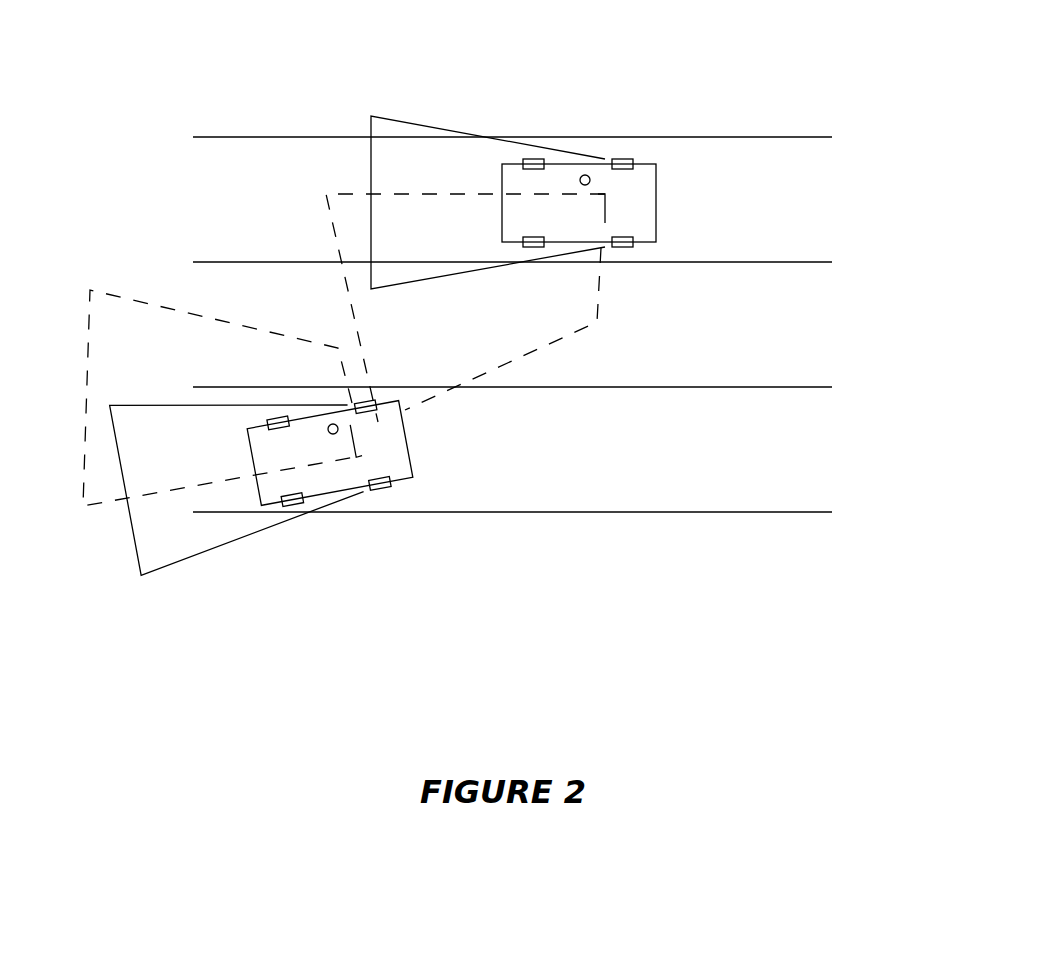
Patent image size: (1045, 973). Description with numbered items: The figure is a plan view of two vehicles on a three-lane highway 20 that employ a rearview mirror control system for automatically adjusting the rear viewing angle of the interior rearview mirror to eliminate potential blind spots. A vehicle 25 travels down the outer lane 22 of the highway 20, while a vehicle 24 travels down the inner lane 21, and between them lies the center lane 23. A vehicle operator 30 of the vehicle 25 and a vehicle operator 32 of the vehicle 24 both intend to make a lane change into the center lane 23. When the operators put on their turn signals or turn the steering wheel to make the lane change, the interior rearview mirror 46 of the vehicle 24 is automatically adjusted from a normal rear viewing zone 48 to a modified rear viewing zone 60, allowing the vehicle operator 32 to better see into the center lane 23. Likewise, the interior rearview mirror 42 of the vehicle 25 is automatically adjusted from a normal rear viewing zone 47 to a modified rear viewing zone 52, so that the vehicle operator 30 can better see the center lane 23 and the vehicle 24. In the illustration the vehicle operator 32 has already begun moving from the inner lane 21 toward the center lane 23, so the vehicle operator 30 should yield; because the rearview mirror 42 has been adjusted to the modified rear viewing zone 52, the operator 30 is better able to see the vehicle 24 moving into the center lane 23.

The three-lane highway 20 is at (737, 137).
The inner lane 21 is at (778, 443).
The outer lane 22 is at (778, 195).
The center lane 23 is at (778, 318).
The vehicle 24 is at (407, 440).
The vehicle 25 is at (656, 204).
The vehicle operator 30 is at (585, 175).
The vehicle operator 32 is at (328, 428).
The interior rearview mirror 42 is at (605, 203).
The interior rearview mirror 46 is at (358, 448).
The normal rear viewing zone 47 is at (370, 157).
The normal rear viewing zone 48 is at (132, 527).
The modified rear viewing zone 52 is at (336, 245).
The modified rear viewing zone 60 is at (87, 328).